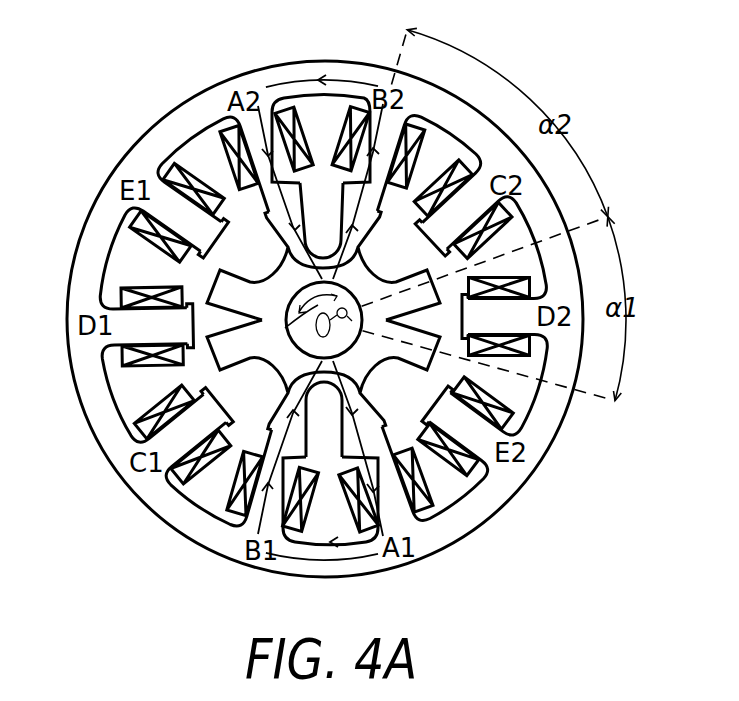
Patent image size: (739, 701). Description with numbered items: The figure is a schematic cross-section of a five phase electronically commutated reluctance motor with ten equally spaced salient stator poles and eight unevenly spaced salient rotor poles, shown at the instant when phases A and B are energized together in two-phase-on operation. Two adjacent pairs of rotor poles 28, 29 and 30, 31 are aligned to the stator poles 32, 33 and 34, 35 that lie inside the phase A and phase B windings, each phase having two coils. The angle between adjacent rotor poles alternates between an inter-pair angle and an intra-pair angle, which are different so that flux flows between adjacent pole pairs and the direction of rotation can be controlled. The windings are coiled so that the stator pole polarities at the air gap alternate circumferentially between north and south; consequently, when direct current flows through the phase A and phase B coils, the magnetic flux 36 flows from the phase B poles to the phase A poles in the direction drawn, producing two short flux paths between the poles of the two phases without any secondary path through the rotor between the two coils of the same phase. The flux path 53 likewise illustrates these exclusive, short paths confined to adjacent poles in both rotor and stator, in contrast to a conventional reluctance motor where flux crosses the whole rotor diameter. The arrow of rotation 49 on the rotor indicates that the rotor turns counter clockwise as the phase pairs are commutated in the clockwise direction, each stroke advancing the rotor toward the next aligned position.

The rotor pole 28 is at (278, 232).
The rotor pole 29 is at (278, 414).
The rotor pole 30 is at (362, 230).
The rotor pole 31 is at (370, 410).
The stator pole 32 is at (228, 186).
The stator pole 33 is at (237, 484).
The stator pole 34 is at (412, 180).
The stator pole 35 is at (423, 472).
The magnetic flux 36 is at (337, 78).
The arrow of rotation 49 is at (318, 305).
The flux path 53 is at (317, 562).